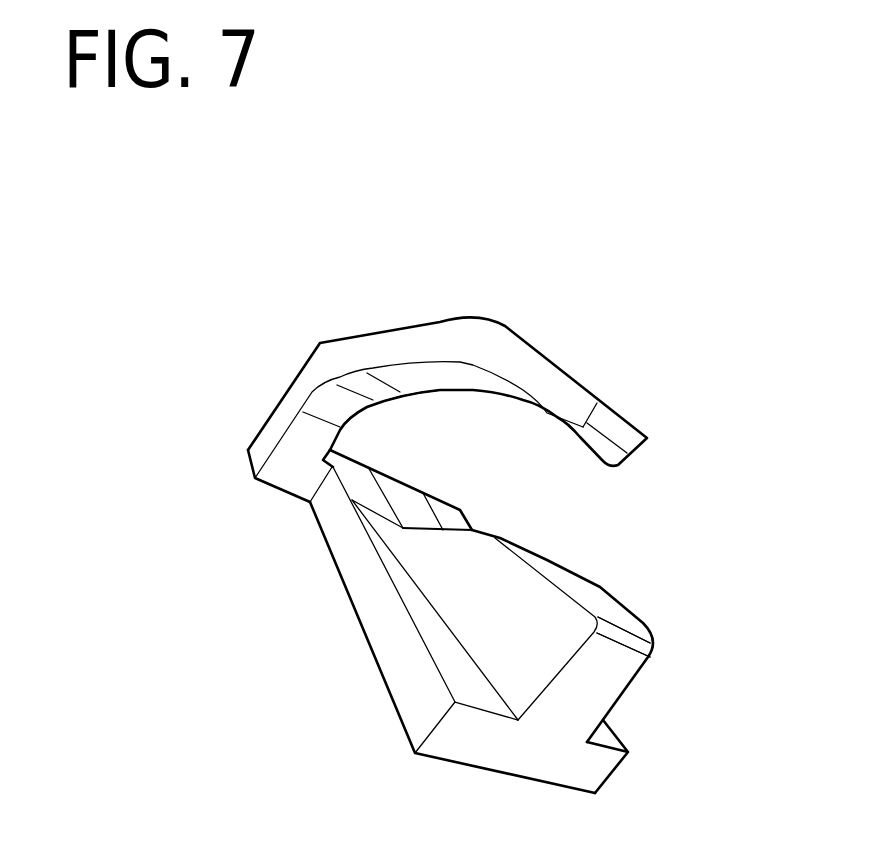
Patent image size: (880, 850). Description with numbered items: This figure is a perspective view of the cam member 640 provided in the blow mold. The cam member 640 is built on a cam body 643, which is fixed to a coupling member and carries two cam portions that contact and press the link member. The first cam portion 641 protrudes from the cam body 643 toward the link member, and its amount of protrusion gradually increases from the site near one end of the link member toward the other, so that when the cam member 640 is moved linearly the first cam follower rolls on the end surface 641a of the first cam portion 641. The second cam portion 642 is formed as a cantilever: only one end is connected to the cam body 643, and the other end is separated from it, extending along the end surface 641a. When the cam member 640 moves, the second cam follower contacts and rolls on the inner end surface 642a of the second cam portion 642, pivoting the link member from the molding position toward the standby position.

The cam member 640 is at (587, 268).
The first cam portion 641 is at (560, 640).
The end surface of the first cam portion 641a is at (603, 612).
The second cam portion 642 is at (583, 400).
The inner end surface of the second cam portion 642a is at (475, 388).
The cam body 643 is at (408, 692).